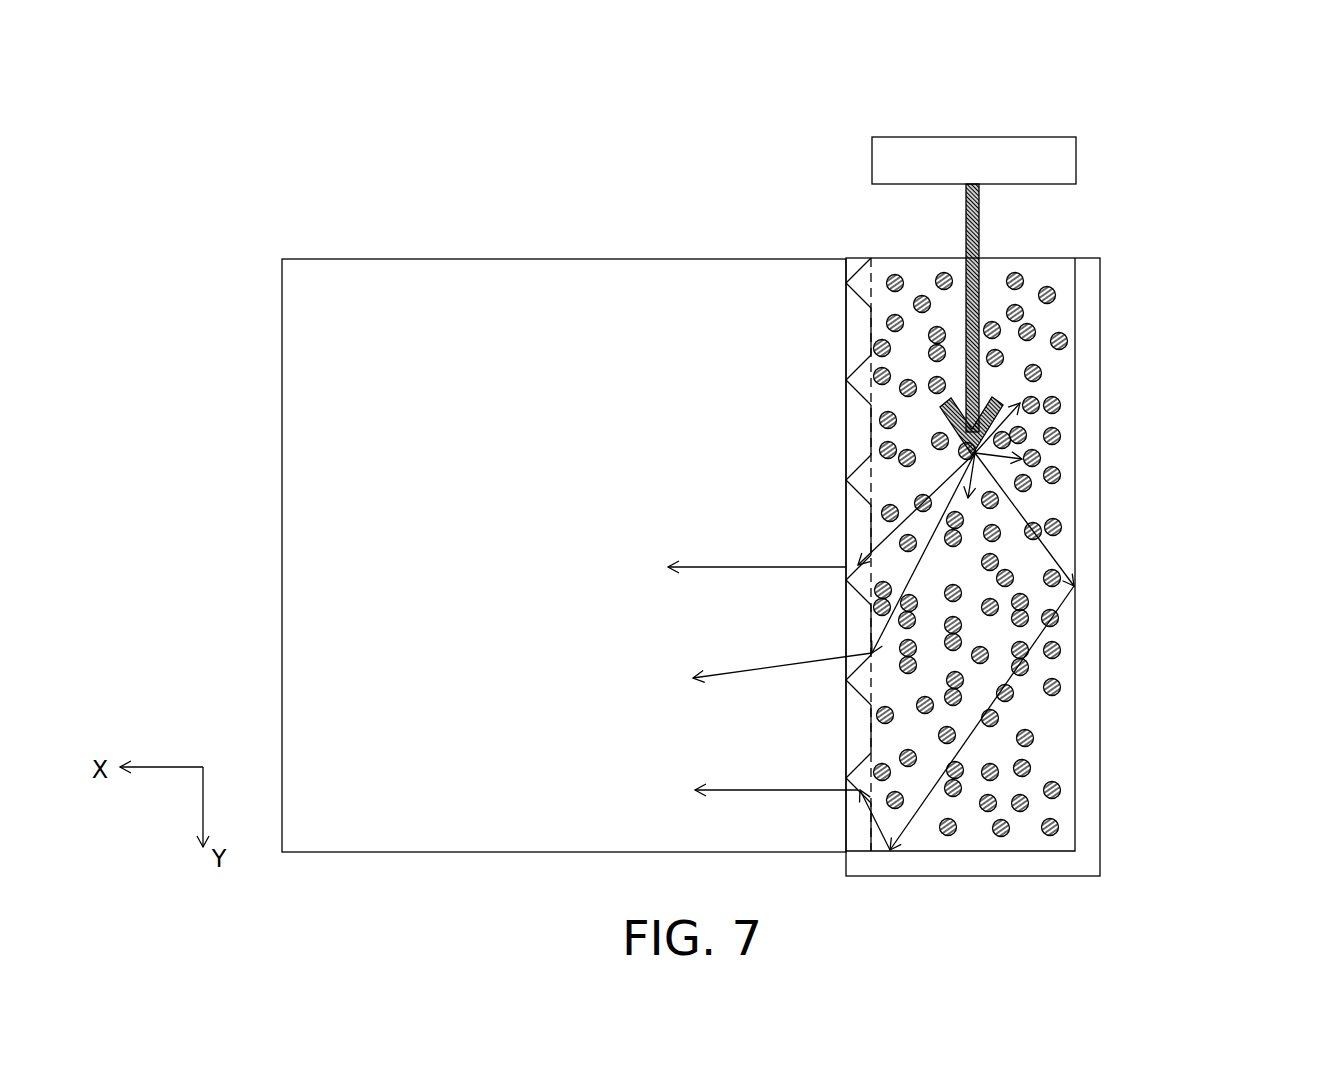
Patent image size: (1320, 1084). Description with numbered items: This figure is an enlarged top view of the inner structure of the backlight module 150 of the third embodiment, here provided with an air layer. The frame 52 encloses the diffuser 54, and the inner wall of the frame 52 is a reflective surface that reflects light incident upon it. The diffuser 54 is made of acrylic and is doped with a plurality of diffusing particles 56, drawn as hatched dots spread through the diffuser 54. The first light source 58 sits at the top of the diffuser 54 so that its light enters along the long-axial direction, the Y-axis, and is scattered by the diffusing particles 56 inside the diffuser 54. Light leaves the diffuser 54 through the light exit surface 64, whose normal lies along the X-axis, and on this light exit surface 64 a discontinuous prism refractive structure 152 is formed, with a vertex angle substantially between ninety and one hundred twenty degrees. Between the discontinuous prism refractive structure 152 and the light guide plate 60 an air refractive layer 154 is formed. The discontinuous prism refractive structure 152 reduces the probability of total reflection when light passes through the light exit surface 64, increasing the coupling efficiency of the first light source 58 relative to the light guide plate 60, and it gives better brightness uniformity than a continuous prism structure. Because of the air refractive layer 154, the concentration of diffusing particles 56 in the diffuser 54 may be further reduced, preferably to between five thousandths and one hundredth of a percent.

The backlight module 150 is at (1210, 118).
The frame 52 is at (1092, 273).
The diffuser 54 is at (1015, 279).
The diffusing particles 56 is at (1060, 341).
The first light source 58 is at (983, 152).
The light guide plate 60 is at (353, 276).
The light exit surface 64 is at (873, 274).
The discontinuous prism refractive structure 152 is at (863, 277).
The air refractive layer 154 is at (860, 338).